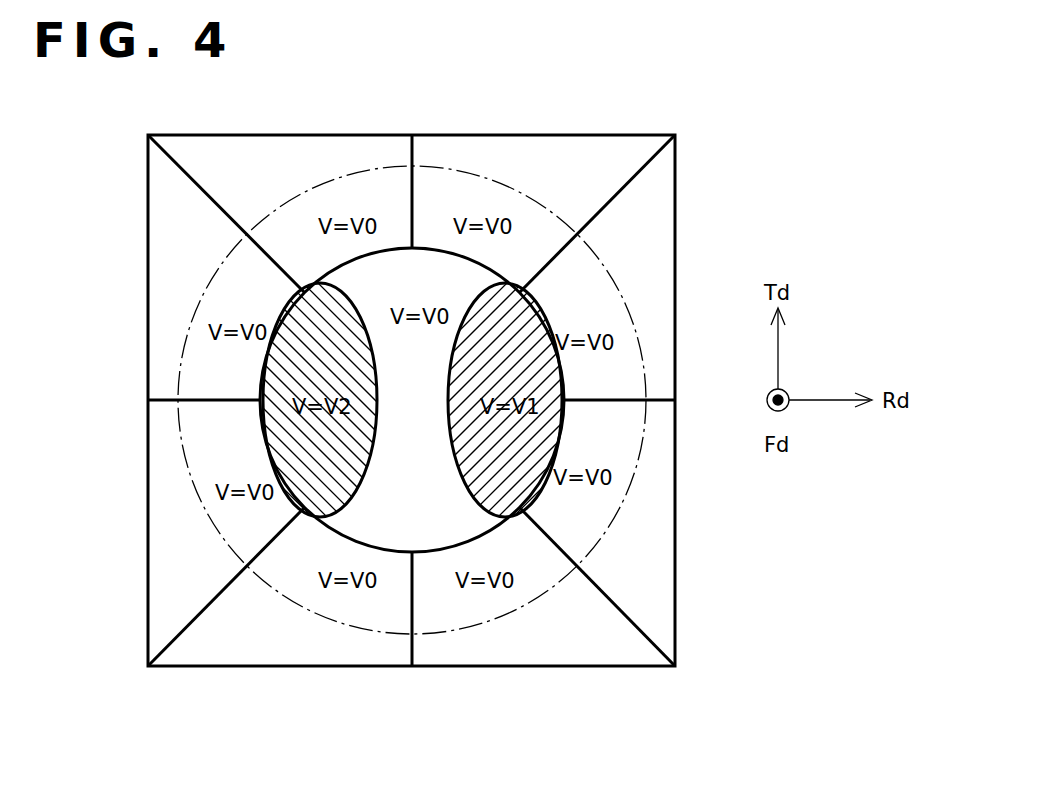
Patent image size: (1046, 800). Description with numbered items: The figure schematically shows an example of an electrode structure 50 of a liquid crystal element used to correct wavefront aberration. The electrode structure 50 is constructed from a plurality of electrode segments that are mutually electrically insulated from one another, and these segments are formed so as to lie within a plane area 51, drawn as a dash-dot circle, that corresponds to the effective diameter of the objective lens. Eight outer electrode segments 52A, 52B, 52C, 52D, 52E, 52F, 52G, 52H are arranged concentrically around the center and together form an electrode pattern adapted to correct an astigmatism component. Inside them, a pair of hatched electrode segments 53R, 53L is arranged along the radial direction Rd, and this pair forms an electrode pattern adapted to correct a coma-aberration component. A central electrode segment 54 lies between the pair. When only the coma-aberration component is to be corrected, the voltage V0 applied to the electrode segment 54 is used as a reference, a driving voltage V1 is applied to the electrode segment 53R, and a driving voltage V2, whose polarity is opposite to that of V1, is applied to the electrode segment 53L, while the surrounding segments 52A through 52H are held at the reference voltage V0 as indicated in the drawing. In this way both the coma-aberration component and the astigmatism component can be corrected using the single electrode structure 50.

The electrode structure 50 is at (680, 151).
The plane area 51 is at (604, 262).
The electrode segment 54 is at (408, 288).
The electrode segment 52A is at (285, 142).
The electrode segment 52B is at (517, 145).
The electrode segment 52C is at (665, 203).
The electrode segment 52D is at (668, 520).
The electrode segment 52E is at (532, 660).
The electrode segment 52F is at (255, 663).
The electrode segment 52G is at (177, 533).
The electrode segment 52H is at (177, 235).
The electrode segment 53L is at (288, 378).
The electrode segment 53R is at (548, 378).